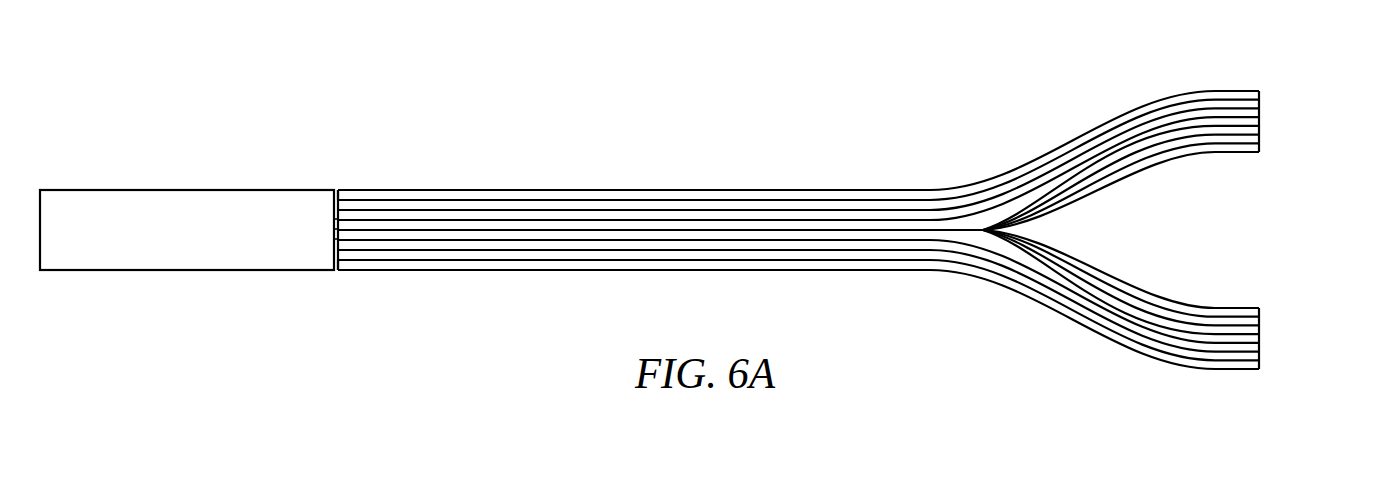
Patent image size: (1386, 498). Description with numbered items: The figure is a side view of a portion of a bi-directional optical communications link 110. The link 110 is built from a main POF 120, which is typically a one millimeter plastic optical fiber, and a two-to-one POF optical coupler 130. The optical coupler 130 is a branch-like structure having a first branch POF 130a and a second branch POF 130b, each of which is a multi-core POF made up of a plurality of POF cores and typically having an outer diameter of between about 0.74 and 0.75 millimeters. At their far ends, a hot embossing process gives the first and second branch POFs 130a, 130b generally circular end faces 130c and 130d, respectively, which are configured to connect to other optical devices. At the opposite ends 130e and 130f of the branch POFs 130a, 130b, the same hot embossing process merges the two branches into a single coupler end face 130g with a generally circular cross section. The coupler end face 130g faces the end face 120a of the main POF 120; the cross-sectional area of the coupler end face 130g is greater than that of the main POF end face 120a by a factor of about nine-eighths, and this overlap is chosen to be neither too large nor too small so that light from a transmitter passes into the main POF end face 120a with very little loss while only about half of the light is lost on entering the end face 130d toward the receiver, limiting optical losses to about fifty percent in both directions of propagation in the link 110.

The bi-directional optical communications link 110 is at (358, 83).
The main POF 120 is at (163, 146).
The end face of main POF 120a is at (350, 219).
The 2-to-1 POF optical coupler 130 is at (796, 142).
The first branch POF 130a is at (1121, 137).
The second branch POF 130b is at (1140, 345).
The end face of first branch POF 130c is at (1259, 93).
The end face of second branch POF 130d is at (1259, 355).
The end of first branch POF 130e is at (331, 176).
The end of second branch POF 130f is at (346, 292).
The coupler end face 130g is at (334, 254).